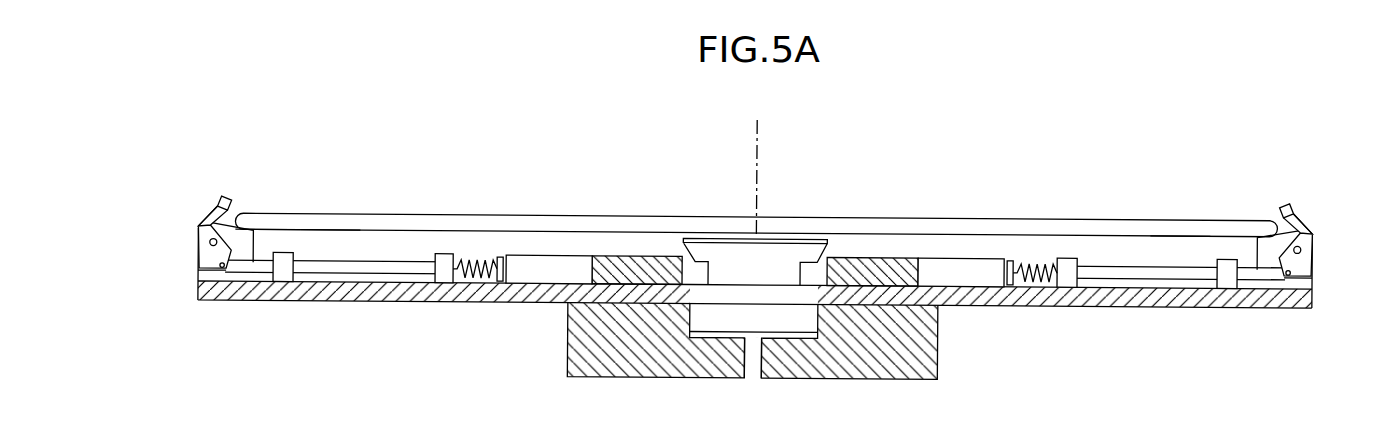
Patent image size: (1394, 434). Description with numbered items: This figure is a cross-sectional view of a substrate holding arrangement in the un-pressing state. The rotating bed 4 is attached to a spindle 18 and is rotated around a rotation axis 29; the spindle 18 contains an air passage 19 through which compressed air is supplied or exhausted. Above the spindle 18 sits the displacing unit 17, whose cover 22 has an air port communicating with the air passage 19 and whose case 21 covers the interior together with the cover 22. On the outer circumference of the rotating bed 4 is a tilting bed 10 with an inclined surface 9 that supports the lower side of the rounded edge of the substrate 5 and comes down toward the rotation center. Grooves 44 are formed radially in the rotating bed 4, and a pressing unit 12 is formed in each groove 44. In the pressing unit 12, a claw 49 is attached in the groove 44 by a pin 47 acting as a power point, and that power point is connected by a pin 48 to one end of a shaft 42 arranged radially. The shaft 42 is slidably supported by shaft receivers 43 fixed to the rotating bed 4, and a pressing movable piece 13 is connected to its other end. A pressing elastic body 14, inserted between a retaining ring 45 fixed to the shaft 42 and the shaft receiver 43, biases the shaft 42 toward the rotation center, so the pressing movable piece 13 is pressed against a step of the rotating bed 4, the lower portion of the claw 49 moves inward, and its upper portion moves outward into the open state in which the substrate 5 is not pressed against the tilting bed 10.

The rotating bed 4 is at (198, 268).
The substrate 5 is at (622, 227).
The inclined surface 9 is at (226, 200).
The tilting bed 10 is at (240, 280).
The pressing unit 12 is at (943, 146).
The pressing movable piece 13 is at (553, 268).
The pressing elastic body 14 is at (475, 272).
The displacing unit 17 is at (766, 250).
The spindle 18 is at (577, 348).
The air passage 19 is at (752, 360).
The case 21 is at (737, 300).
The cover 22 is at (703, 336).
The rotation axis 29 is at (758, 137).
The shaft 42 is at (385, 270).
The shaft receiver 43 is at (283, 262).
The groove 44 is at (330, 250).
The retaining ring 45 is at (500, 268).
The pin 47 is at (209, 247).
The pin 48 is at (219, 271).
The claw 49 is at (207, 220).